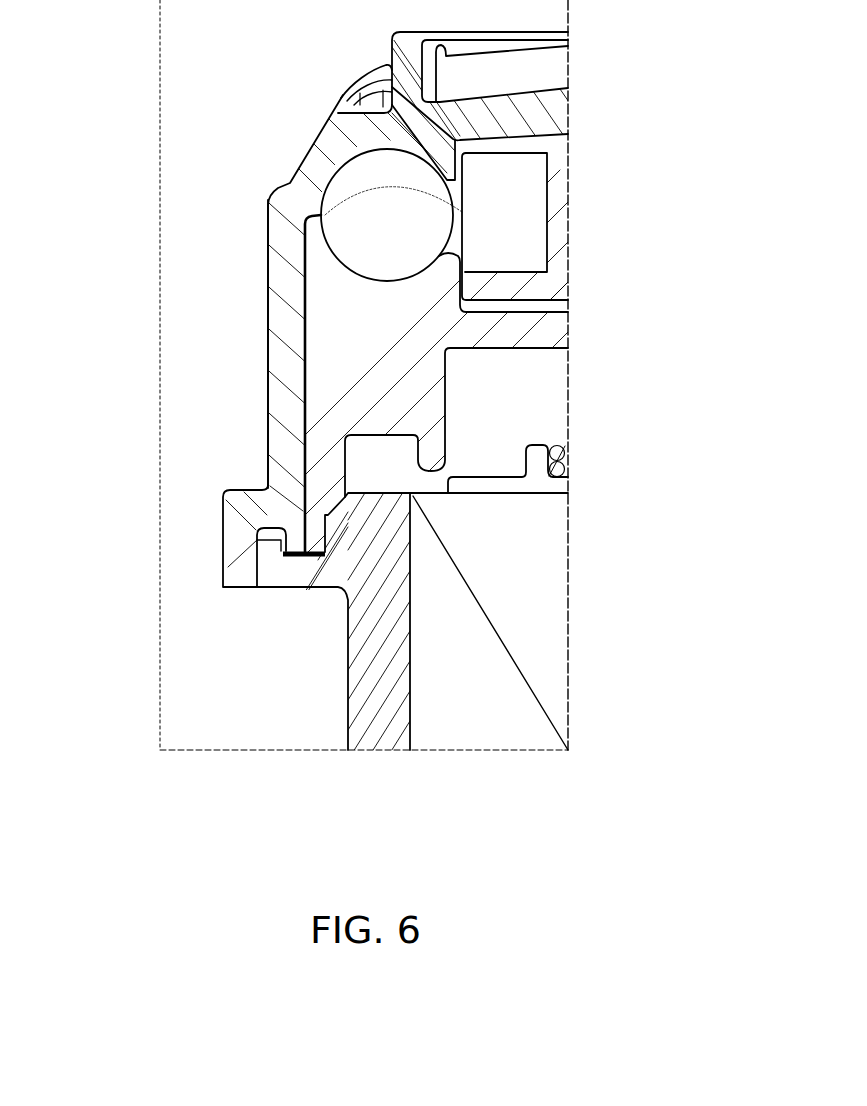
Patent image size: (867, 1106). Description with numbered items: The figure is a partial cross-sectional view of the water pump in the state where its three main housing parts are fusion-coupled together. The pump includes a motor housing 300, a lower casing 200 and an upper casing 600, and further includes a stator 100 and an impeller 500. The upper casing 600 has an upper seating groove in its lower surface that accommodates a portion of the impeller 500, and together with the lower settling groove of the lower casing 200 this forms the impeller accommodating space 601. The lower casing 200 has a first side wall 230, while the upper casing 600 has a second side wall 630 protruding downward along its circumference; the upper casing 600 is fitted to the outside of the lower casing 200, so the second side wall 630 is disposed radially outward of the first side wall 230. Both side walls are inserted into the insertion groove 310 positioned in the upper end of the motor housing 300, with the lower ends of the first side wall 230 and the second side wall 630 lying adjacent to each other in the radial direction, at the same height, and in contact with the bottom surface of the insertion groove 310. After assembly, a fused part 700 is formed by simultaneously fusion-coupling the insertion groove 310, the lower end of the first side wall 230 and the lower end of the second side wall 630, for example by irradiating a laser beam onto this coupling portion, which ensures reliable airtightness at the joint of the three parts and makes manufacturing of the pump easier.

The stator 100 is at (487, 708).
The lower casing 200 is at (392, 325).
The first side wall 230 is at (297, 395).
The motor housing 300 is at (340, 695).
The insertion groove 310 is at (280, 535).
The impeller 500 is at (538, 295).
The upper casing 600 is at (305, 153).
The impeller accommodating space 601 is at (305, 220).
The second side wall 630 is at (287, 432).
The fused part 700 is at (307, 590).